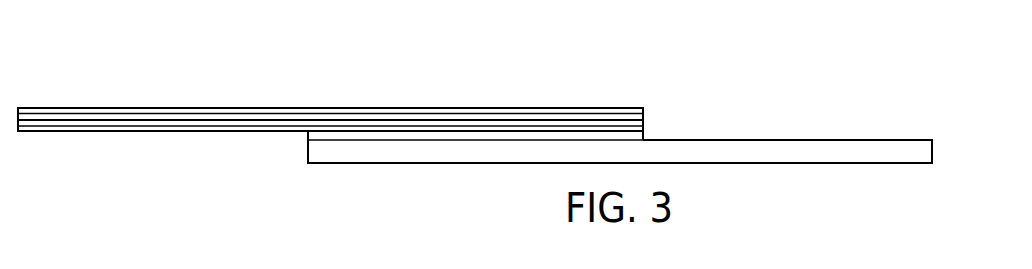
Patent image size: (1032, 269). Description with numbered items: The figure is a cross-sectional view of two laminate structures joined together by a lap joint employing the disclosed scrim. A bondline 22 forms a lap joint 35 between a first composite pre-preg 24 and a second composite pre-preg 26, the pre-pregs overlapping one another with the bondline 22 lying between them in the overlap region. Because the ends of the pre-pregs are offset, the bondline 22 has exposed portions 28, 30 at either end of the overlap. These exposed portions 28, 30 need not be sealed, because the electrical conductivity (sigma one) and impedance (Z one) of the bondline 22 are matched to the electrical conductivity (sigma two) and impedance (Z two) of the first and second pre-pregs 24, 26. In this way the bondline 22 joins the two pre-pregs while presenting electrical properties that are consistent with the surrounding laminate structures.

The bondline 22 is at (475, 128).
The first composite pre-preg 24 is at (332, 111).
The second composite pre-preg 26 is at (820, 150).
The exposed portion 28 is at (288, 144).
The exposed portion 30 is at (662, 129).
The lap joint 35 is at (365, 155).